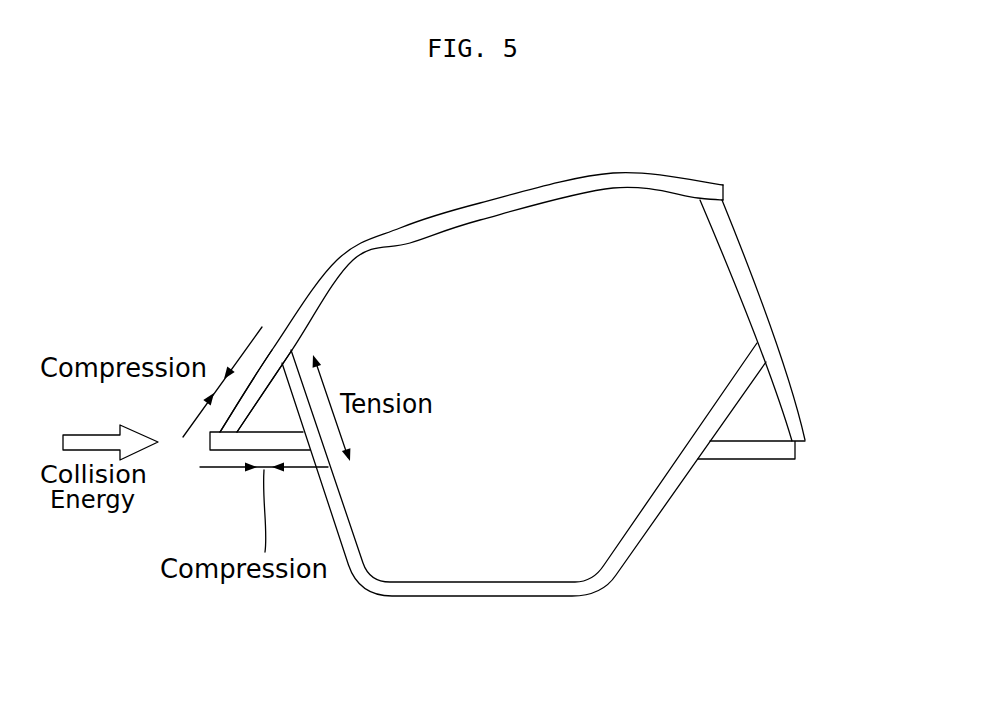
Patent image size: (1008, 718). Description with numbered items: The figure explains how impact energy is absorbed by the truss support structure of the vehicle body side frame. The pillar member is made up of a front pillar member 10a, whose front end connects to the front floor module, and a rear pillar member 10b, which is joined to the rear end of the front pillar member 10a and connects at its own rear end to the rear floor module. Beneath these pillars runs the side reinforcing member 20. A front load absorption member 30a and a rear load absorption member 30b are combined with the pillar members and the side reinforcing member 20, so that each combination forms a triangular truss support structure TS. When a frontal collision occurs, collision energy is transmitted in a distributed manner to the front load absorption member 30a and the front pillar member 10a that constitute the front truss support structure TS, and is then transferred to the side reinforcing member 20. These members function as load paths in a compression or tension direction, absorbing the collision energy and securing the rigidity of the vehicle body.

The front pillar member 10a is at (442, 227).
The rear pillar member 10b is at (758, 308).
The side reinforcing member 20 is at (485, 590).
The front load absorption member 30a is at (228, 445).
The rear load absorption member 30b is at (750, 452).
The truss support structure TS is at (254, 360).